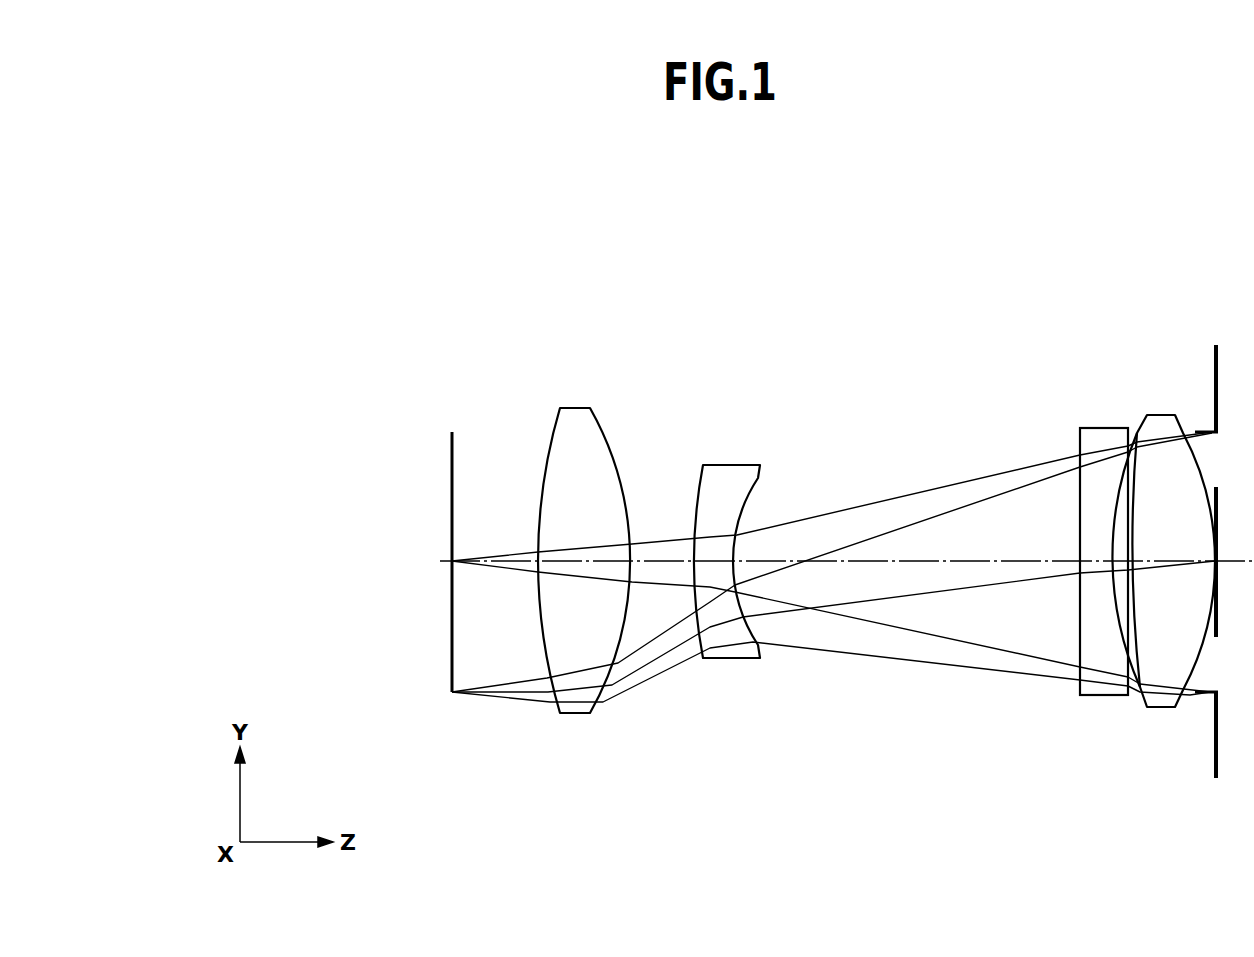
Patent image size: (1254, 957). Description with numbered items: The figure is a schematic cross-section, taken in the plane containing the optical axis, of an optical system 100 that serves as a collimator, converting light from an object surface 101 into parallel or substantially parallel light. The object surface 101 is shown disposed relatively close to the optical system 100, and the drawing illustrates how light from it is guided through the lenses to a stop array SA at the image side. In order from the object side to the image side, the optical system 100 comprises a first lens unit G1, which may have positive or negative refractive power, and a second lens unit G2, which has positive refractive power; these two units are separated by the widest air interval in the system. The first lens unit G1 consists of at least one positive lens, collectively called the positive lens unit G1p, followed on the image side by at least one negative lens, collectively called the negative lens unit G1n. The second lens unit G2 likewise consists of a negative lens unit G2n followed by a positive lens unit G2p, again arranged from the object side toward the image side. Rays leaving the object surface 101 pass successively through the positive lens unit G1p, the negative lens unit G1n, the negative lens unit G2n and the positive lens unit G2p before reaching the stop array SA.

The optical system 100 is at (835, 182).
The object surface 101 is at (450, 653).
The first lens unit G1 is at (808, 262).
The positive lens unit G1p is at (577, 407).
The negative lens unit G1n is at (733, 462).
The second lens unit G2 is at (1210, 261).
The negative lens unit G2n is at (1100, 427).
The positive lens unit G2p is at (1163, 415).
The stop array SA is at (1214, 749).